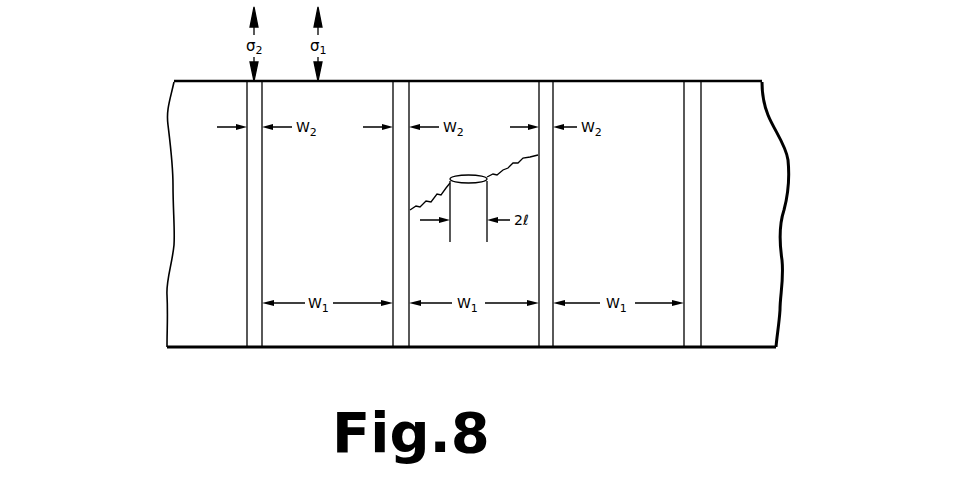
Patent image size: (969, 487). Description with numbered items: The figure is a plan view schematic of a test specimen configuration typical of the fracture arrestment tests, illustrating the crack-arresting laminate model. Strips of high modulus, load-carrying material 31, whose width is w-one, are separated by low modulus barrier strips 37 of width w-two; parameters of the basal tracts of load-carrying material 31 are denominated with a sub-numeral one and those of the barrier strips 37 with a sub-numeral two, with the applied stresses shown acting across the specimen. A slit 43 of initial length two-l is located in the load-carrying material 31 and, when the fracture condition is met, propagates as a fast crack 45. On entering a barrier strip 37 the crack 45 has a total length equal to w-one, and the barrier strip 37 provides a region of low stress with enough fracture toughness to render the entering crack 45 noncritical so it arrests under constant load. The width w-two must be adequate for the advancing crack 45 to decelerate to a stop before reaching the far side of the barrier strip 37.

The load-carrying material 31 is at (477, 81).
The barrier strips 37 is at (400, 81).
The slit 43 is at (457, 175).
The crack 45 is at (505, 169).